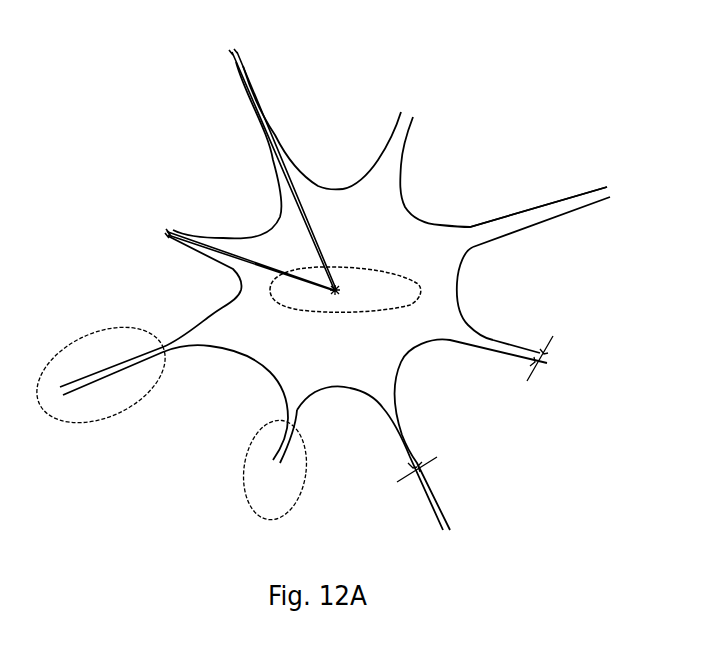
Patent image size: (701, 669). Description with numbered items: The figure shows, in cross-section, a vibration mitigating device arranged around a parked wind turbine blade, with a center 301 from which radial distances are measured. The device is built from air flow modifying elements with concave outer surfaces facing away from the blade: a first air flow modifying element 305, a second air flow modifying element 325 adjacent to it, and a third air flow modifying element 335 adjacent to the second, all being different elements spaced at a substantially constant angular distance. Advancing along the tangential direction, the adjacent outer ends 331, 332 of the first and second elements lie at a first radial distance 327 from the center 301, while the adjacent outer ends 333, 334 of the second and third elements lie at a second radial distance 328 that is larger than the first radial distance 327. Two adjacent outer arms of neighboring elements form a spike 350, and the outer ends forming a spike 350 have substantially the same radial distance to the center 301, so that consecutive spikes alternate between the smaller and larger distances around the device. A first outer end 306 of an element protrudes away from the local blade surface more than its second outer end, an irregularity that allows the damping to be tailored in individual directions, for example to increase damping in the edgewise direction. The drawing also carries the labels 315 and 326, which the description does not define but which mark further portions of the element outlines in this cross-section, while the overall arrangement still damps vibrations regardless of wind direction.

The center of the device 301 is at (336, 292).
The first air flow modifying element 305 is at (238, 298).
The first outer end 306 is at (413, 127).
The wall thickness 315 is at (548, 357).
The second air flow modifying element 325 is at (270, 170).
The instrument channel 326 is at (568, 199).
The first radial distance 327 is at (253, 262).
The second radial distance 328 is at (312, 233).
The outer end 331 is at (168, 237).
The outer end 332 is at (172, 228).
The outer end 333 is at (233, 70).
The outer end 334 is at (267, 116).
The third air flow modifying element 335 is at (343, 188).
The spike 350 is at (128, 410).